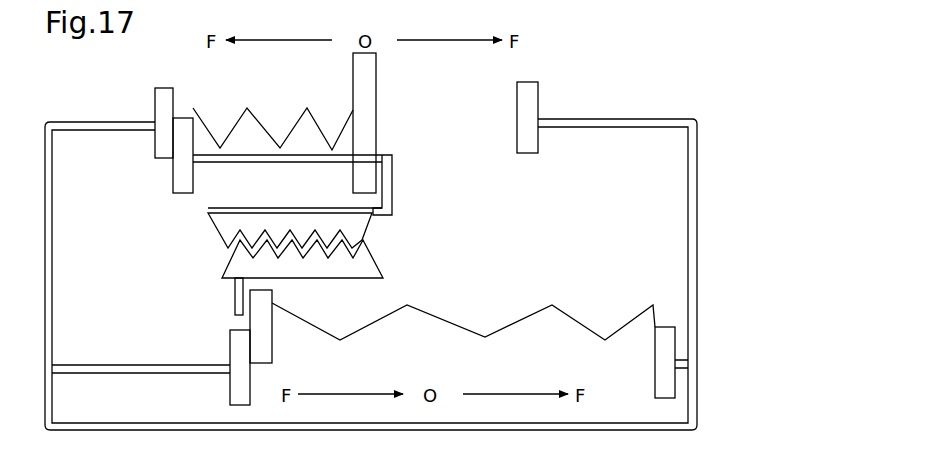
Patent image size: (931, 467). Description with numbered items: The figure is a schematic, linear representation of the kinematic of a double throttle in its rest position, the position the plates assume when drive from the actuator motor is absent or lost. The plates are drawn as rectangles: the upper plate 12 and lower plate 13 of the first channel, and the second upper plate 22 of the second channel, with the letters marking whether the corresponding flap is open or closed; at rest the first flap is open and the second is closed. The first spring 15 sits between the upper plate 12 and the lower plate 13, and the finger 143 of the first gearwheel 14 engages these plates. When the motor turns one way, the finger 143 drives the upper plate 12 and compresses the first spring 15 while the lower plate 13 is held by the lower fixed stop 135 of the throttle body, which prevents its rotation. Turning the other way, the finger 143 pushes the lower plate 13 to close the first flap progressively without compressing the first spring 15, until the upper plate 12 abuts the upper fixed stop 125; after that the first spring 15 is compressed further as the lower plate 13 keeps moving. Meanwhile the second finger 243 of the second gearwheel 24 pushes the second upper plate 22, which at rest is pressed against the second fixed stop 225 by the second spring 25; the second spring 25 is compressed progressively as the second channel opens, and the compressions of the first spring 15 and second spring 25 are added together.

The upper plate 12 is at (373, 83).
The upper fixed stop 125 is at (529, 100).
The lower plate 13 is at (176, 172).
The lower fixed stop 135 is at (157, 103).
The first gearwheel 14 is at (216, 226).
The finger 143 is at (394, 186).
The first spring 15 is at (270, 127).
The second upper plate 22 is at (270, 353).
The second fixed stop 225 is at (240, 388).
The second gearwheel 24 is at (380, 256).
The second finger 243 is at (236, 300).
The second spring 25 is at (580, 321).